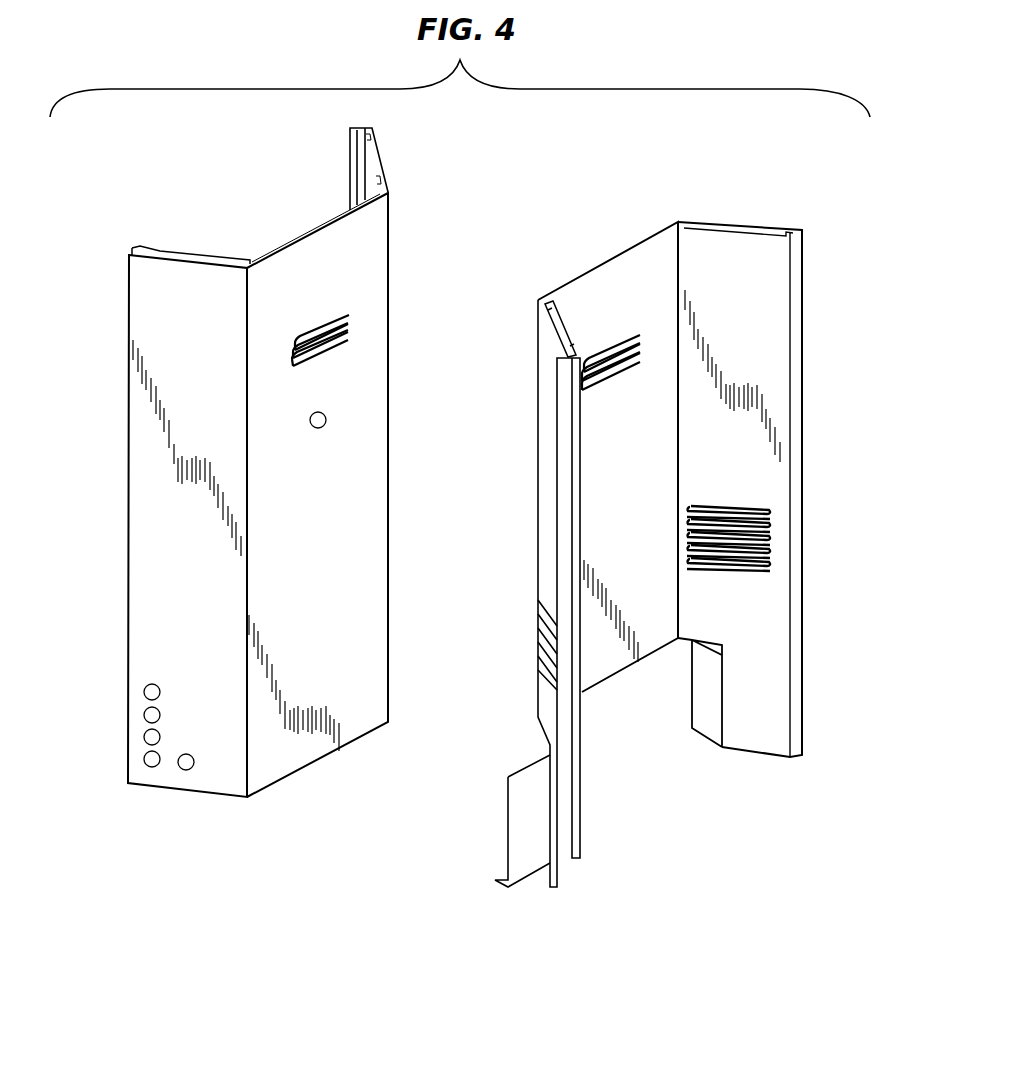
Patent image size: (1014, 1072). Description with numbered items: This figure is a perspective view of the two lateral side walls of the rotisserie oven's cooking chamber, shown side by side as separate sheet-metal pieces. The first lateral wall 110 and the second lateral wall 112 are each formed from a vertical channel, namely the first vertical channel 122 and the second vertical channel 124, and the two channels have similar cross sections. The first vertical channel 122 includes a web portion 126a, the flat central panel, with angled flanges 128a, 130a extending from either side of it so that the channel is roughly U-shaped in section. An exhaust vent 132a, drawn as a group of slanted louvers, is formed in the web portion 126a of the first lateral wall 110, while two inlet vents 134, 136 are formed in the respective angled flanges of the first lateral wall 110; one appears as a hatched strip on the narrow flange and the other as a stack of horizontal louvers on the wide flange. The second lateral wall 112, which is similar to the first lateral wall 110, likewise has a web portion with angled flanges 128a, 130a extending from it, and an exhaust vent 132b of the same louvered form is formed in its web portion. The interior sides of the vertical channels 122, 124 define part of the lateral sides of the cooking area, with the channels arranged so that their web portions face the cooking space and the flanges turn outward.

The first lateral wall 110 is at (667, 470).
The second lateral wall 112 is at (295, 468).
The first vertical channel 122 is at (640, 282).
The second vertical channel 124 is at (372, 272).
The web portion 126a is at (608, 457).
The angled flange 128a is at (148, 300).
The angled flange 130a is at (348, 165).
The exhaust vent 132a is at (600, 345).
The exhaust vent 132b is at (357, 337).
The inlet vent 134 is at (542, 662).
The inlet vent 136 is at (765, 530).